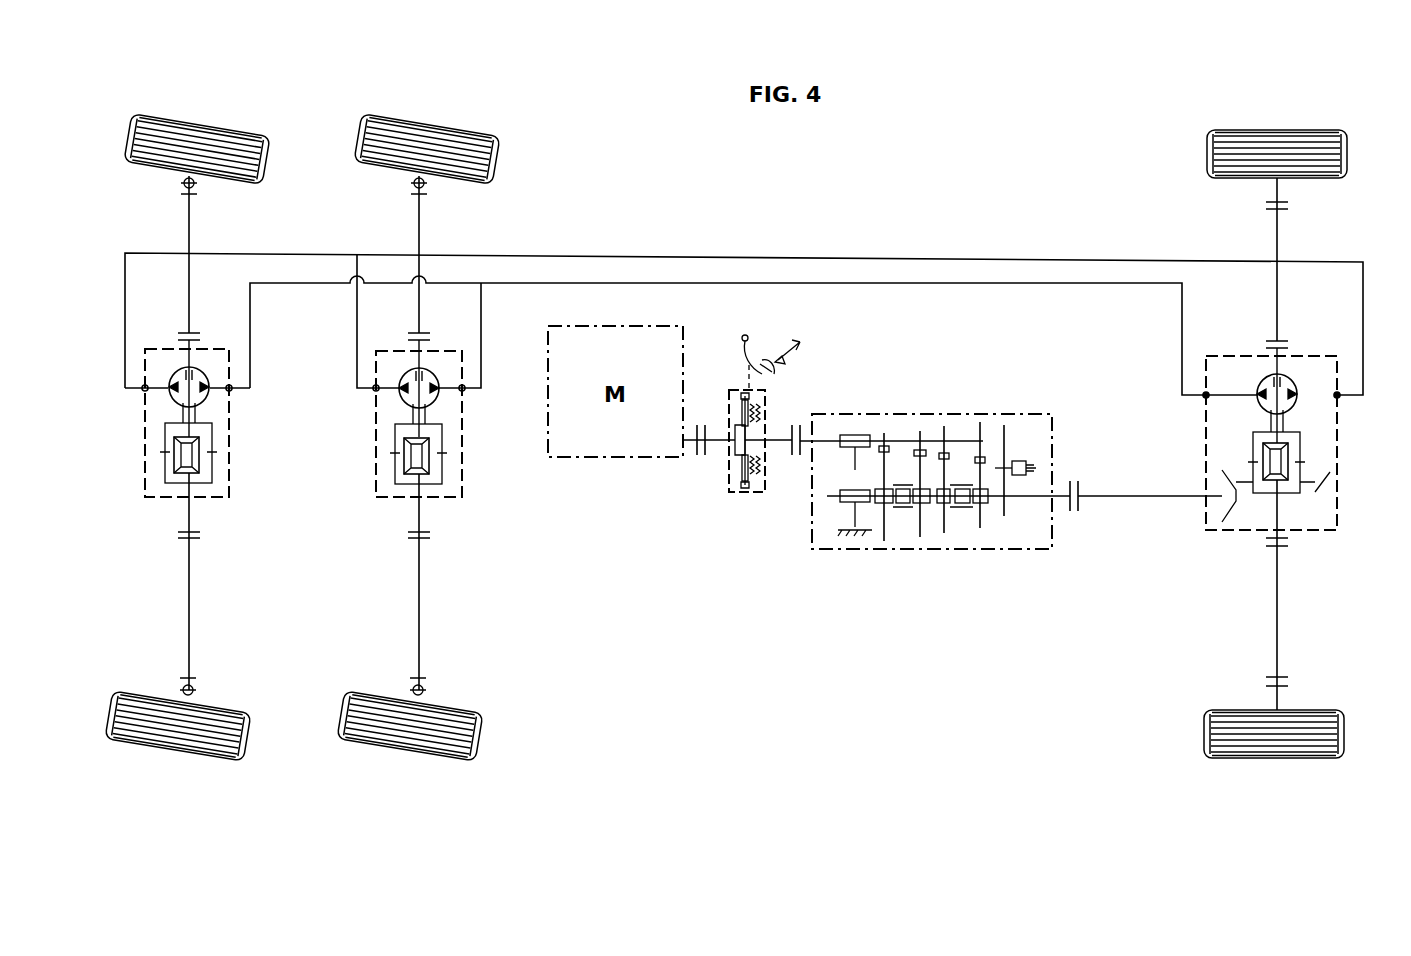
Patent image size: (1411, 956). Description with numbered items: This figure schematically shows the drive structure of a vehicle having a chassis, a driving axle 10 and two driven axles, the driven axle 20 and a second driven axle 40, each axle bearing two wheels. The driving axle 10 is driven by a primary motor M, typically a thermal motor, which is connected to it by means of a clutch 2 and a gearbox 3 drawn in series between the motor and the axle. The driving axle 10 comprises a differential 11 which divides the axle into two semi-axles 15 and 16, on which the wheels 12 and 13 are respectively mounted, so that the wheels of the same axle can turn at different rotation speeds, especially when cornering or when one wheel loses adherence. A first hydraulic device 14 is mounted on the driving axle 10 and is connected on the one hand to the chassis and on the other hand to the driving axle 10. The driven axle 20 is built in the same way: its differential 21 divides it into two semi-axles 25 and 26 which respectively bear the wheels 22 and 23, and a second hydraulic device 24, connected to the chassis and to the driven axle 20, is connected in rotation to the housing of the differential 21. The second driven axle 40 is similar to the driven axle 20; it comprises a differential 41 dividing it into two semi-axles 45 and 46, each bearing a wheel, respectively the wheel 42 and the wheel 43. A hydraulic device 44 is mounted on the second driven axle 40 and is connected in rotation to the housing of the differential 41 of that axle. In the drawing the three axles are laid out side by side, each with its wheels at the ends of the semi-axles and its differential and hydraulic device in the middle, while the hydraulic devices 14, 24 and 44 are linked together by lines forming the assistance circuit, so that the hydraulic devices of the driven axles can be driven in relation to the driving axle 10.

The clutch 2 is at (730, 472).
The gearbox 3 is at (812, 503).
The driving axle 10 is at (1286, 516).
The differential 11 is at (1310, 440).
The wheel 12 is at (1320, 150).
The wheel 13 is at (1312, 742).
The first hydraulic device 14 is at (1258, 410).
The semi-axle 15 is at (1277, 233).
The semi-axle 16 is at (1277, 629).
The driven axle 20 is at (428, 512).
The differential 21 is at (446, 472).
The wheel 22 is at (460, 148).
The wheel 23 is at (452, 745).
The second hydraulic device 24 is at (398, 403).
The semi-axle 25 is at (419, 224).
The semi-axle 26 is at (419, 620).
The second driven axle 40 is at (198, 512).
The differential 41 is at (216, 472).
The wheel 42 is at (230, 148).
The wheel 43 is at (222, 745).
The hydraulic device 44 is at (168, 403).
The semi-axle 45 is at (189, 224).
The semi-axle 46 is at (189, 620).